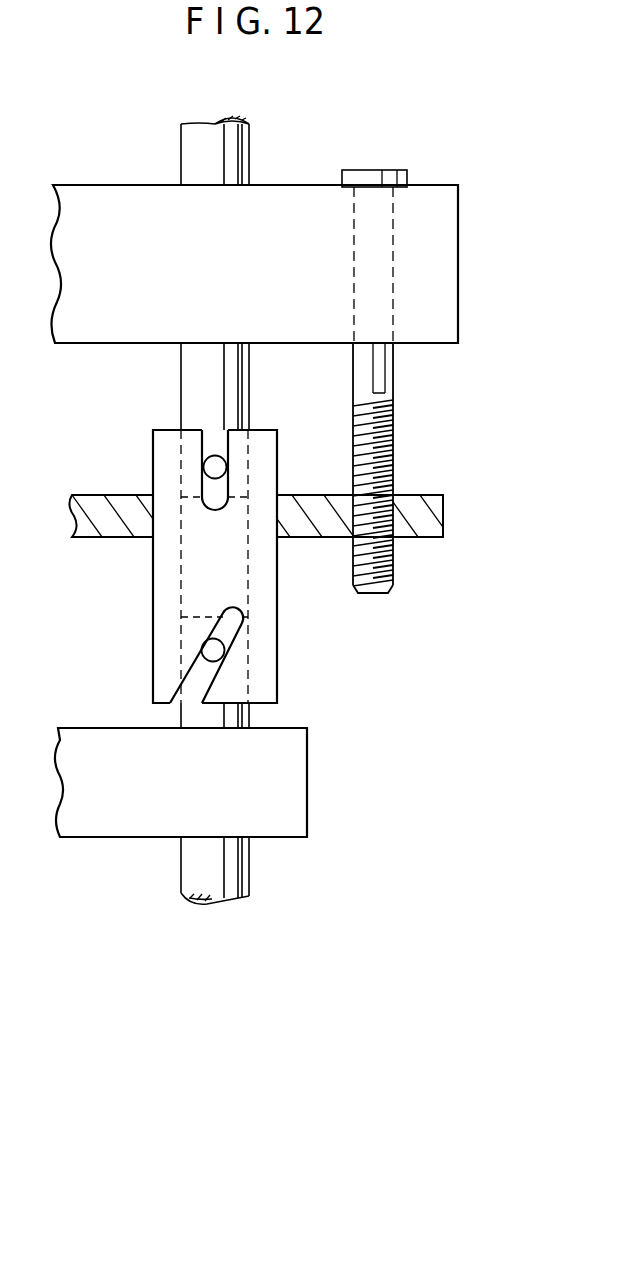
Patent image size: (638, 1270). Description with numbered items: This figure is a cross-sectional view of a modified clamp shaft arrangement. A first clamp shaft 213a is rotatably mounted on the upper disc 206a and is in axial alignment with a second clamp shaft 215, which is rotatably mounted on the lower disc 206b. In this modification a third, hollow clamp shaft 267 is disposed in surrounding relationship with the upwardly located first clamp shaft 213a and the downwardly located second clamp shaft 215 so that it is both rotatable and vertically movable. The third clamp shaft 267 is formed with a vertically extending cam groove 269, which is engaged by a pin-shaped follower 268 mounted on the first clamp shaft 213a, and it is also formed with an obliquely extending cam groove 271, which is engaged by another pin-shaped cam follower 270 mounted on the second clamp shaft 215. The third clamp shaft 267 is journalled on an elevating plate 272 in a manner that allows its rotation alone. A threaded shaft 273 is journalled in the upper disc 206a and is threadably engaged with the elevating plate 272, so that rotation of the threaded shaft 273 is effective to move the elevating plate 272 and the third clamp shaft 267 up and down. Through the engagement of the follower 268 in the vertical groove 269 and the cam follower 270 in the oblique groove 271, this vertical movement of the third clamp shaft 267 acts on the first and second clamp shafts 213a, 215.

The first clamp shaft 213a is at (233, 160).
The upper disc 206a is at (459, 313).
The threaded shaft 273 is at (393, 437).
The elevating plate 272 is at (445, 518).
The third clamp shaft 267 is at (278, 676).
The vertically extending cam groove 269 is at (203, 437).
The pin-shaped follower 268 is at (208, 465).
The pin-shaped cam follower 270 is at (208, 650).
The obliquely extending cam groove 271 is at (193, 677).
The lower disc 206b is at (308, 793).
The second clamp shaft 215 is at (233, 868).